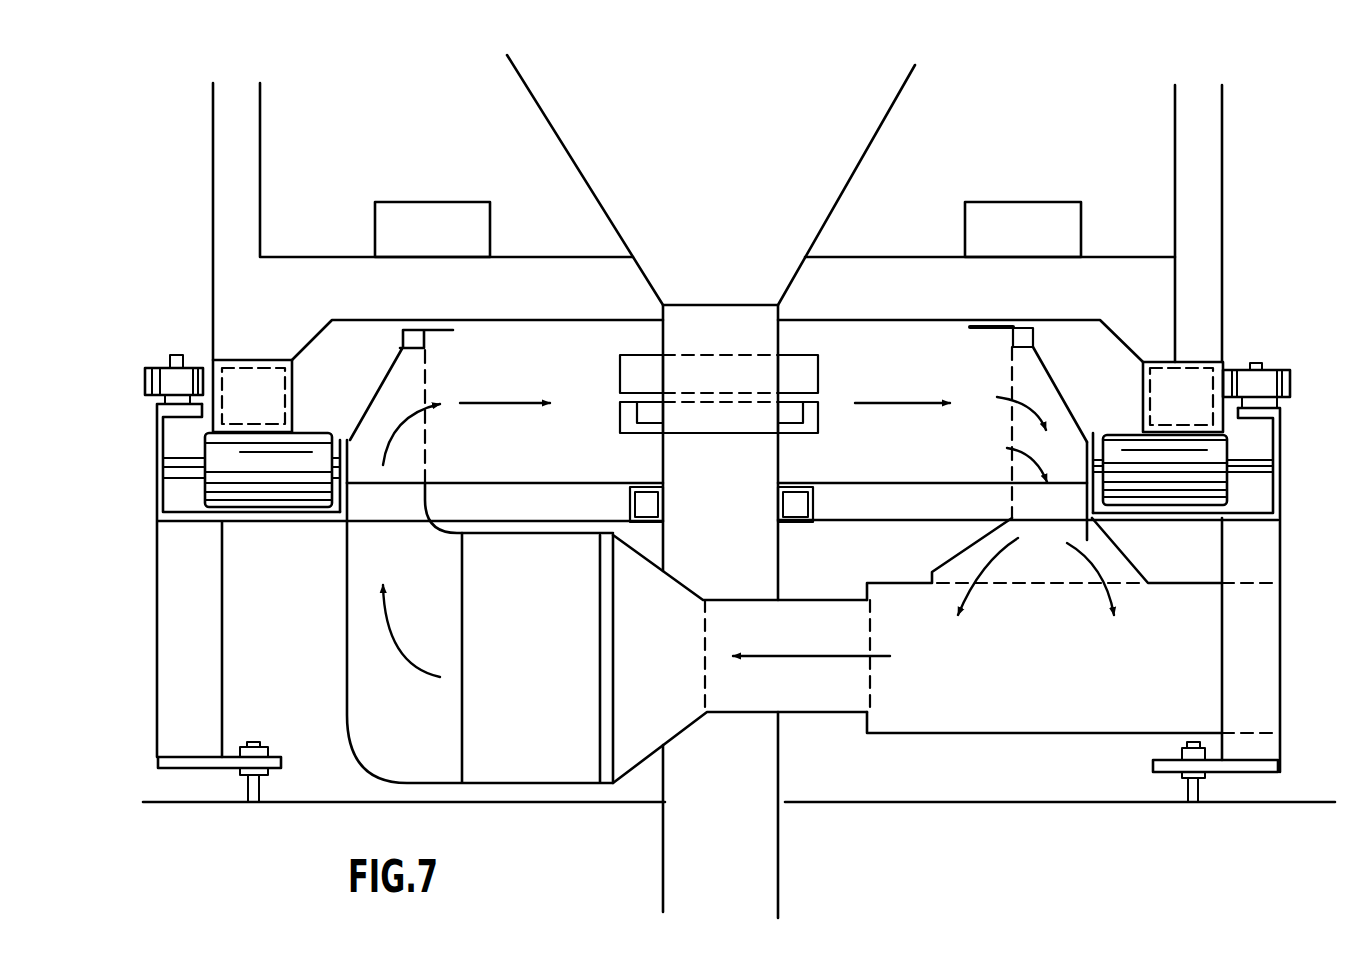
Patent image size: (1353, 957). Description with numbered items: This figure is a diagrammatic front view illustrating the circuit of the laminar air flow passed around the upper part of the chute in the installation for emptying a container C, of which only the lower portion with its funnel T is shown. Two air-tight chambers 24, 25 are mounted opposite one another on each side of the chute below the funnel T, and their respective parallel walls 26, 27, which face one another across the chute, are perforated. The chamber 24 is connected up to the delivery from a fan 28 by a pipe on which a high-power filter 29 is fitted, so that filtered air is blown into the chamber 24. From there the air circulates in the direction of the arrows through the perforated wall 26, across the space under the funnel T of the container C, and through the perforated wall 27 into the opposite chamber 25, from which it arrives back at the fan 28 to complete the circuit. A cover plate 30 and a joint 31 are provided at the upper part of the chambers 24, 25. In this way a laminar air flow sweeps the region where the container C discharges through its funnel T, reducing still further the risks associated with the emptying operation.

The air-tight chamber 24 is at (391, 394).
The air-tight chamber 25 is at (1040, 400).
The perforated wall 26 is at (428, 380).
The perforated wall 27 is at (1010, 373).
The fan 28 is at (988, 708).
The high-power filter 29 is at (530, 762).
The cover plate 30 is at (978, 325).
The joint 31 is at (1022, 330).
The funnel T is at (838, 163).
The container C is at (1177, 162).